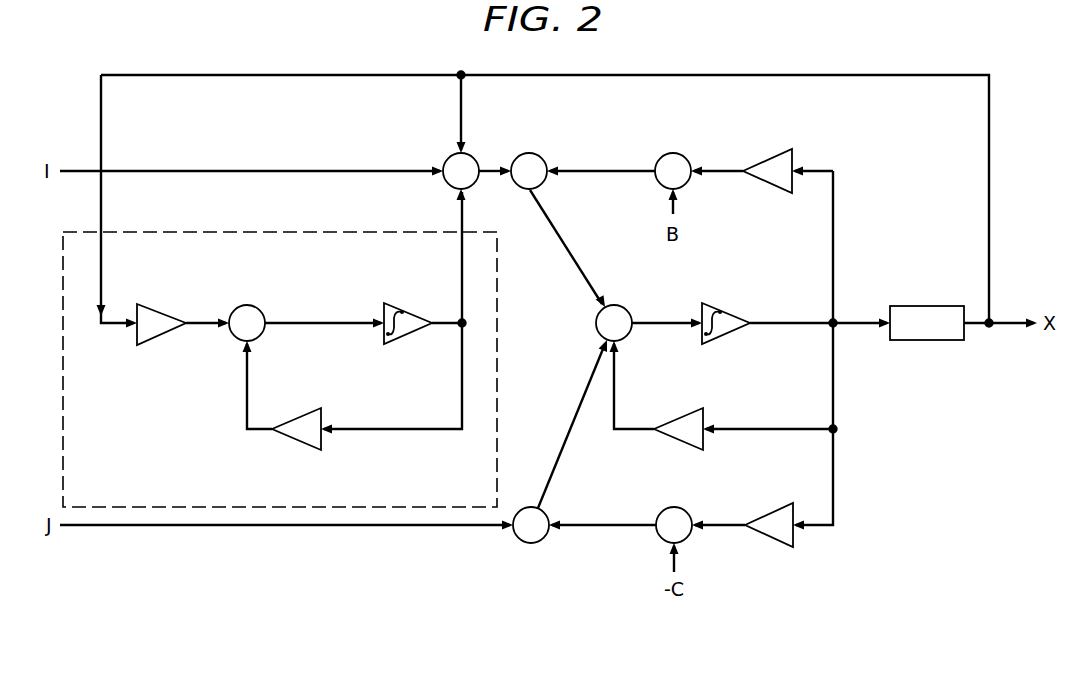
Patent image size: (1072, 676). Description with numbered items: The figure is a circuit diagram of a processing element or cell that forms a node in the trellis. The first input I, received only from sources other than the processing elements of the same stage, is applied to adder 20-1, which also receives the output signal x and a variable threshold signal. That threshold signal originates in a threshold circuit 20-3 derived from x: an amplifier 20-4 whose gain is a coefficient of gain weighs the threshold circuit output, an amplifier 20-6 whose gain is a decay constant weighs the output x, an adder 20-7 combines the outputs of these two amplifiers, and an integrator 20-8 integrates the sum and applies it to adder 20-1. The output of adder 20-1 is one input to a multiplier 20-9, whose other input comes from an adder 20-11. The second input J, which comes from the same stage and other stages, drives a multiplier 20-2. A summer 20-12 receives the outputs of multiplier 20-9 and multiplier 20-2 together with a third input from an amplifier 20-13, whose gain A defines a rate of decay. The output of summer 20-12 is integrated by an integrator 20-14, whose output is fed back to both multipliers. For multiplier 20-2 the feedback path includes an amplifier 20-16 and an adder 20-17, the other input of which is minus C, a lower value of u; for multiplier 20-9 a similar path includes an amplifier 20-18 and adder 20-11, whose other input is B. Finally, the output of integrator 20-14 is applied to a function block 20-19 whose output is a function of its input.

The adder 20-1 is at (428, 153).
The multiplier 20-2 is at (513, 549).
The threshold circuit 20-3 is at (280, 369).
The amplifier 20-4 is at (295, 414).
The amplifier 20-6 is at (165, 306).
The adder 20-7 is at (261, 304).
The integrator 20-8 is at (411, 342).
The multiplier 20-9 is at (542, 153).
The adder 20-11 is at (661, 149).
The summer 20-12 is at (631, 299).
The amplifier 20-13 is at (674, 409).
The integrator 20-14 is at (743, 309).
The amplifier 20-16 is at (774, 501).
The adder 20-17 is at (664, 502).
The amplifier 20-18 is at (775, 151).
The function block 20-19 is at (928, 295).